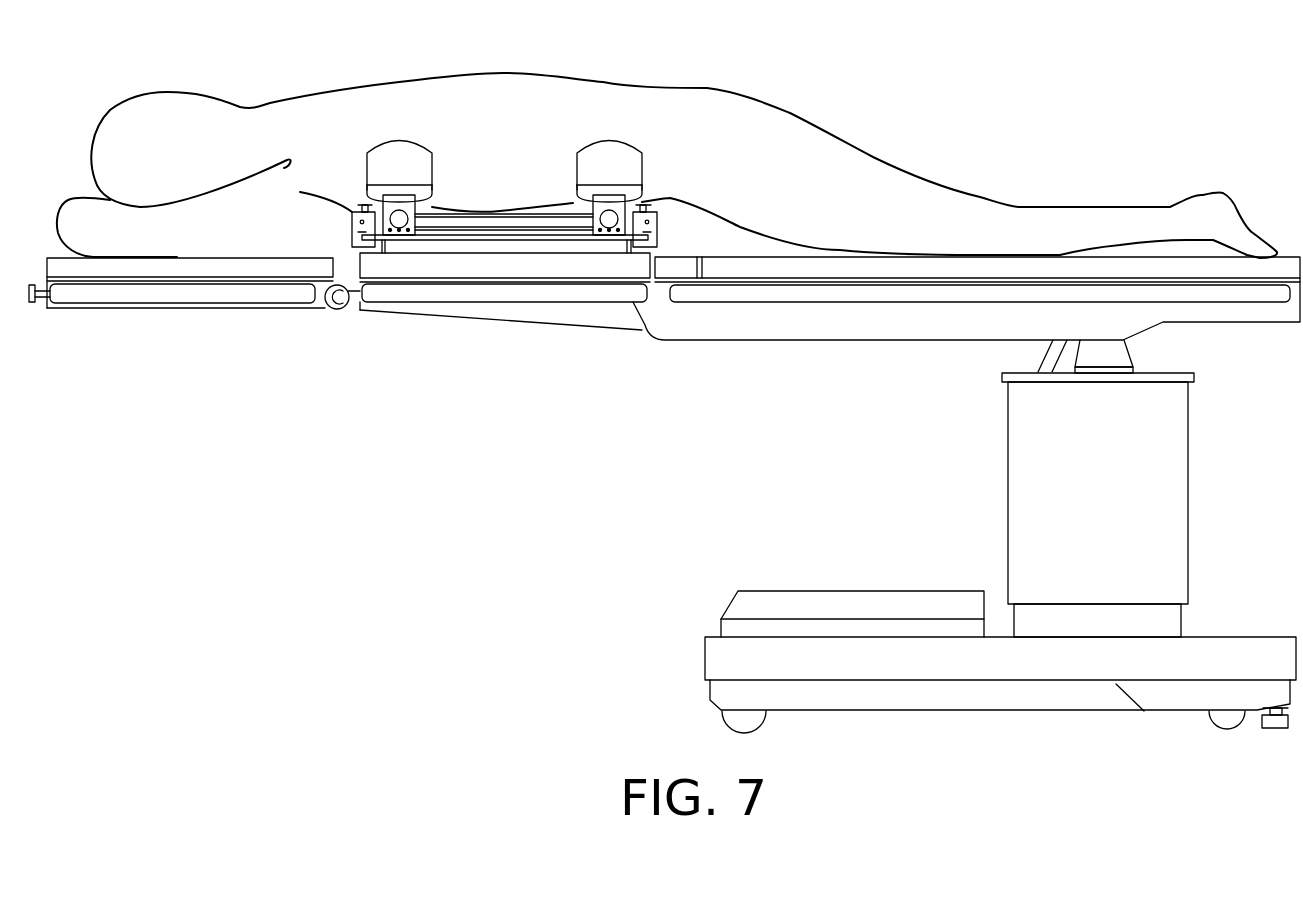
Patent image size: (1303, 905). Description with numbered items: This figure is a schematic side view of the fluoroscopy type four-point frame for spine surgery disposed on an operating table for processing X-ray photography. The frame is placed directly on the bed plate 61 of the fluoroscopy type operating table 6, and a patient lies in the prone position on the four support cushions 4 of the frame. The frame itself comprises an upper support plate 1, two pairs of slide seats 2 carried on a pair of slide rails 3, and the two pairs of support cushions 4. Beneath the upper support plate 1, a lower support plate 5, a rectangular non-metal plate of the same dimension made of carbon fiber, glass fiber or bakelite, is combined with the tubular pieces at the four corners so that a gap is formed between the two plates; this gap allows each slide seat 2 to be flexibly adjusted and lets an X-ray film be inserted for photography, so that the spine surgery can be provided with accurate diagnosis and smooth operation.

The upper support plate 1 is at (450, 235).
The slide seat 2 is at (657, 223).
The slide rail 3 is at (497, 223).
The support cushion 4 is at (405, 152).
The lower support plate 5 is at (488, 255).
The fluoroscopy type operating table 6 is at (752, 341).
The bed plate 61 is at (540, 267).